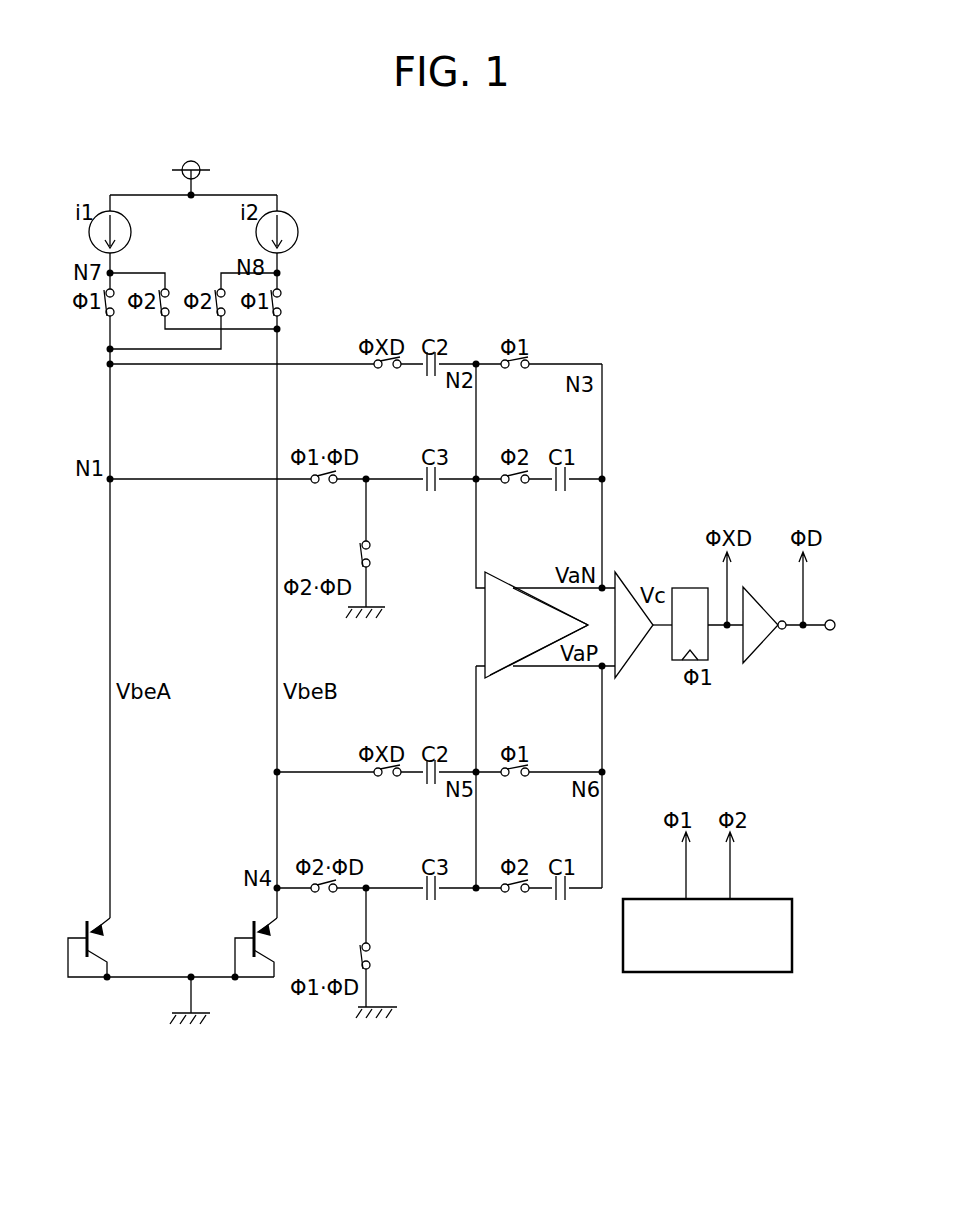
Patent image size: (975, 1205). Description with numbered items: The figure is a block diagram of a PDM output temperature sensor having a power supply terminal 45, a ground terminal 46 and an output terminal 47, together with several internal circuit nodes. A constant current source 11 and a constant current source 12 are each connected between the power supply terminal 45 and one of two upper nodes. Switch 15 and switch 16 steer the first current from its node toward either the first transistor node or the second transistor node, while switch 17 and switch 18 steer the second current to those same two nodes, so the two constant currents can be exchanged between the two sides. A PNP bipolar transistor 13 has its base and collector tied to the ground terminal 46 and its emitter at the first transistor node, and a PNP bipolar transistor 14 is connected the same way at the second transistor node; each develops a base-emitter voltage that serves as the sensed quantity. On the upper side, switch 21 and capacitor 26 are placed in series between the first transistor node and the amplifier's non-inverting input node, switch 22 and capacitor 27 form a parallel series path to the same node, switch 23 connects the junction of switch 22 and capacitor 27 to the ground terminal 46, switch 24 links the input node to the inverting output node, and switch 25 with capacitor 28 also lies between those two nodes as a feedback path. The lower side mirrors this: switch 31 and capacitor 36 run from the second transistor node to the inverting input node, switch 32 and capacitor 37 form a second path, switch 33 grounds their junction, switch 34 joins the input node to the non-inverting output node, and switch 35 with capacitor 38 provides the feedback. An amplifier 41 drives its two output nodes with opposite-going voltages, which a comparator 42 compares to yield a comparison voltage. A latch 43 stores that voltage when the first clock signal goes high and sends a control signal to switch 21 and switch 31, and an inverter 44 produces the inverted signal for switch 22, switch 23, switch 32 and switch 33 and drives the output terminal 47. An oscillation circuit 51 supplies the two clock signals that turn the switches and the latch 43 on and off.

The constant current source 11 is at (133, 232).
The constant current source 12 is at (300, 232).
The PNP bipolar transistor 13 is at (89, 960).
The PNP bipolar transistor 14 is at (256, 960).
The switch 15 is at (116, 296).
The switch 16 is at (171, 296).
The switch 17 is at (227, 296).
The switch 18 is at (284, 296).
The switch 21 is at (389, 371).
The switch 22 is at (326, 486).
The switch 23 is at (376, 556).
The switch 24 is at (517, 371).
The switch 25 is at (517, 486).
The capacitor 26 is at (432, 379).
The capacitor 27 is at (432, 494).
The capacitor 28 is at (561, 494).
The switch 31 is at (389, 779).
The switch 32 is at (326, 895).
The switch 33 is at (378, 957).
The switch 34 is at (517, 779).
The switch 35 is at (517, 895).
The capacitor 36 is at (432, 787).
The capacitor 37 is at (432, 903).
The capacitor 38 is at (561, 903).
The amplifier 41 is at (498, 678).
The comparator 42 is at (636, 656).
The latch 43 is at (712, 657).
The inverter 44 is at (759, 660).
The power supply terminal 45 is at (184, 168).
The ground terminal 46 is at (173, 1016).
The output terminal 47 is at (831, 632).
The oscillation circuit 51 is at (792, 937).